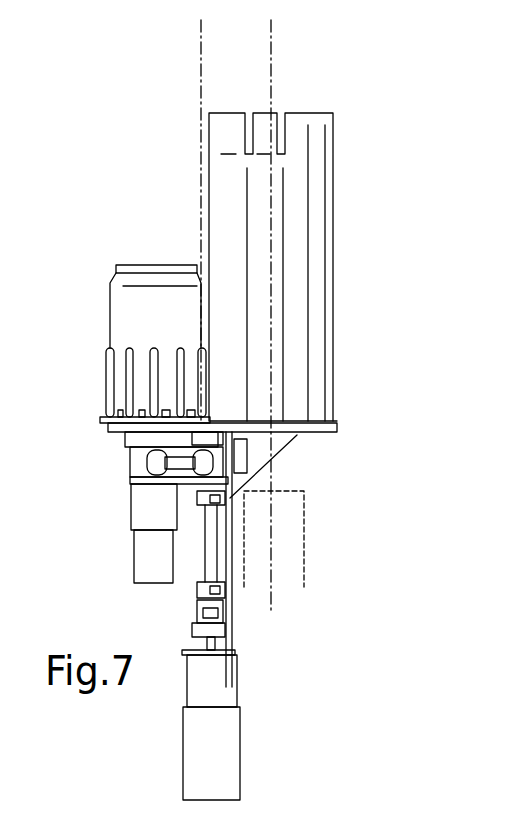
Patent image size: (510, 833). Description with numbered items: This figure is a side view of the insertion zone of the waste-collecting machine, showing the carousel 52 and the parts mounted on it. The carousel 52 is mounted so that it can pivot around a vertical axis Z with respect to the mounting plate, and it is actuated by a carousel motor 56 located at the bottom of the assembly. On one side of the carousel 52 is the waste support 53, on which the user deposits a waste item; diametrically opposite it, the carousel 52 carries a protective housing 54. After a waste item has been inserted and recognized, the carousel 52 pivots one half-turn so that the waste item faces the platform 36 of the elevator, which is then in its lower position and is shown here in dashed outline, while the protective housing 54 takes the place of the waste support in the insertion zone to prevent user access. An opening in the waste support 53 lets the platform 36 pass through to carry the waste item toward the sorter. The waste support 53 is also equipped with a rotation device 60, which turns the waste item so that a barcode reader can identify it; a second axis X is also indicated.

The X axis X is at (272, 62).
The vertical axis Z is at (200, 60).
The platform 36 is at (295, 525).
The carousel 52 is at (108, 431).
The waste support 53 is at (118, 372).
The protective housing 54 is at (320, 238).
The carousel motor 56 is at (228, 747).
The rotation device 60 is at (138, 562).